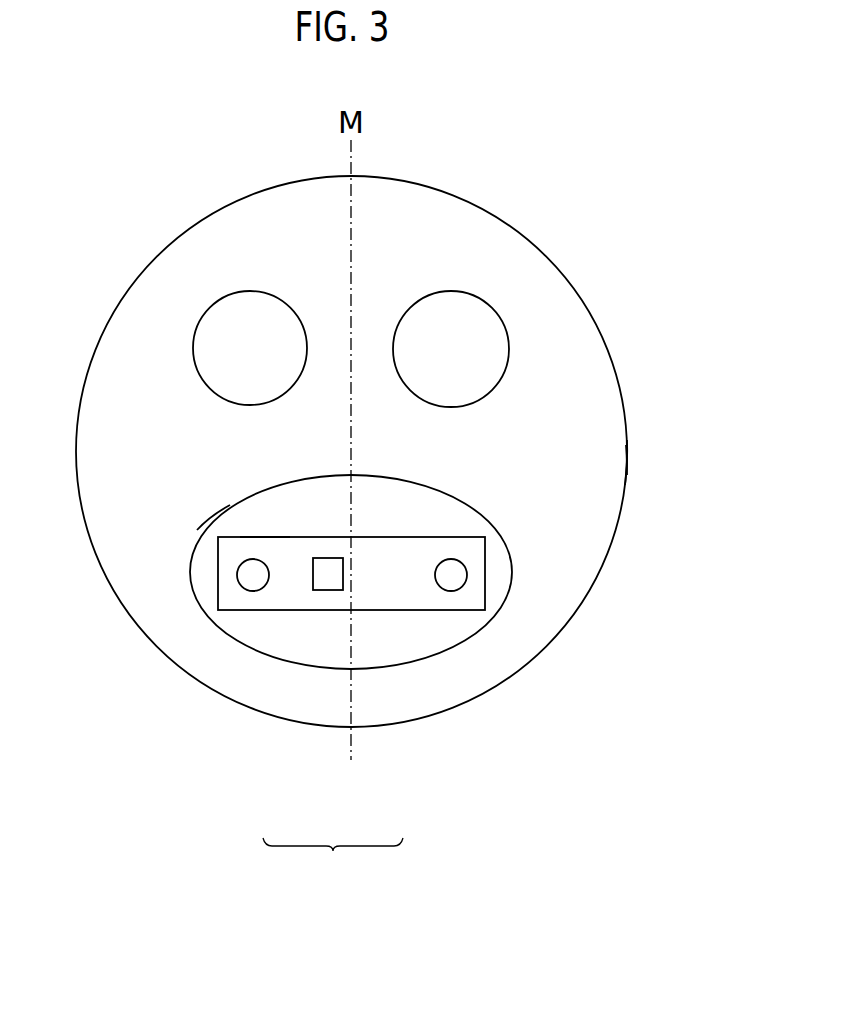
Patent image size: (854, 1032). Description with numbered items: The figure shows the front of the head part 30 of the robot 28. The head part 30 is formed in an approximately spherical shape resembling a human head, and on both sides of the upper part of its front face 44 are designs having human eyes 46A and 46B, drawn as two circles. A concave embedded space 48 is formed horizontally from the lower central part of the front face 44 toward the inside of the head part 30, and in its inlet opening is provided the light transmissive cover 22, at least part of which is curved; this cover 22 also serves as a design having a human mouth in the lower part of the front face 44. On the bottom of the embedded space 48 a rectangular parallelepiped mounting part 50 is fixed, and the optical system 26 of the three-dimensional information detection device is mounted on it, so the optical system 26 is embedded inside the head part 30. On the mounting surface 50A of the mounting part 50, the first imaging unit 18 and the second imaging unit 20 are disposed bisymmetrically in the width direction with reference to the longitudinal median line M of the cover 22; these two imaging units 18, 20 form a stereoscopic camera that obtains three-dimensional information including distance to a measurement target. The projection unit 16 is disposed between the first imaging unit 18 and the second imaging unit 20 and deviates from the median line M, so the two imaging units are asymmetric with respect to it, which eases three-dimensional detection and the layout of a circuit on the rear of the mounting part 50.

The robot 28 is at (516, 147).
The head part 30 is at (635, 413).
The front face 44 is at (612, 460).
The eye 46A is at (237, 309).
The eye 46B is at (471, 308).
The light transmissive cover 22 is at (502, 575).
The embedded space 48 is at (222, 522).
The mounting part 50 is at (451, 528).
The mounting surface 50A is at (257, 545).
The second imaging unit 20 is at (253, 582).
The projection unit 16 is at (332, 582).
The first imaging unit 18 is at (451, 582).
The optical system 26 is at (333, 862).